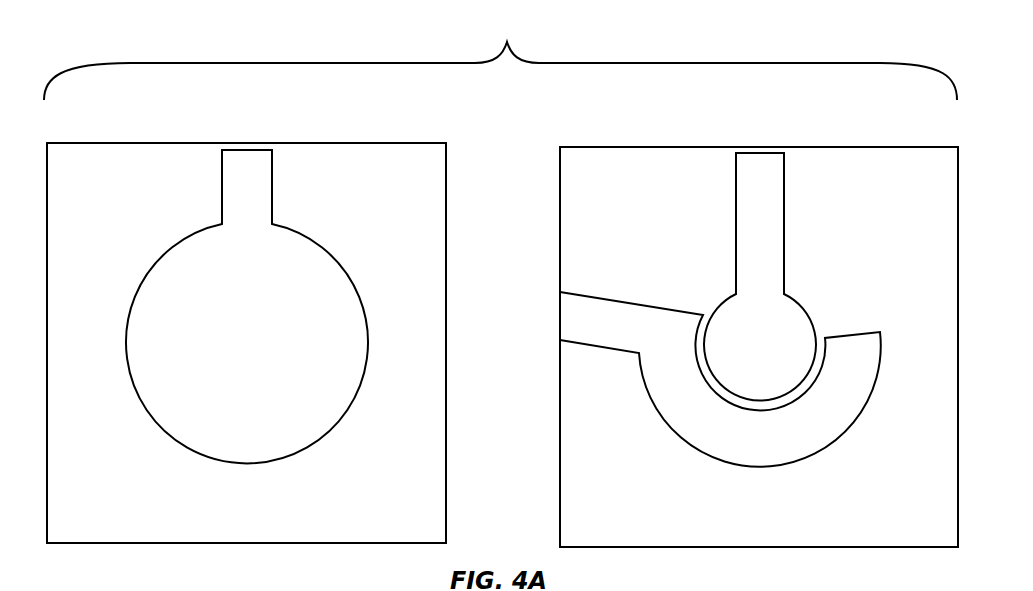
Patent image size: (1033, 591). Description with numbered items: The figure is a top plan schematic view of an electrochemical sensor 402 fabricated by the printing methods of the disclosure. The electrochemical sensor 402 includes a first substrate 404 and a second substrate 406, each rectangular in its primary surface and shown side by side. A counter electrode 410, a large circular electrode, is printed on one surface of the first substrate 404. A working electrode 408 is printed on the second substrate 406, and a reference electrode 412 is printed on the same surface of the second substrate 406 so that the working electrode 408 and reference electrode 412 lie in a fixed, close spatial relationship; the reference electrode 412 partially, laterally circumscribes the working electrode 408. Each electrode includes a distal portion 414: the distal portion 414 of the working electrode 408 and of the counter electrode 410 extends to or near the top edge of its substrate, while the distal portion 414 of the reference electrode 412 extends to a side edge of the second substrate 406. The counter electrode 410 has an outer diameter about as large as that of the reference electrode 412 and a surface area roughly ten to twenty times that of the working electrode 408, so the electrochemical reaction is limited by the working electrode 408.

The electrochemical sensor 402 is at (500, 55).
The first substrate 404 is at (121, 501).
The second substrate 406 is at (632, 512).
The working electrode 408 is at (777, 359).
The counter electrode 410 is at (263, 348).
The reference electrode 412 is at (777, 452).
The distal portion 414 is at (300, 133).